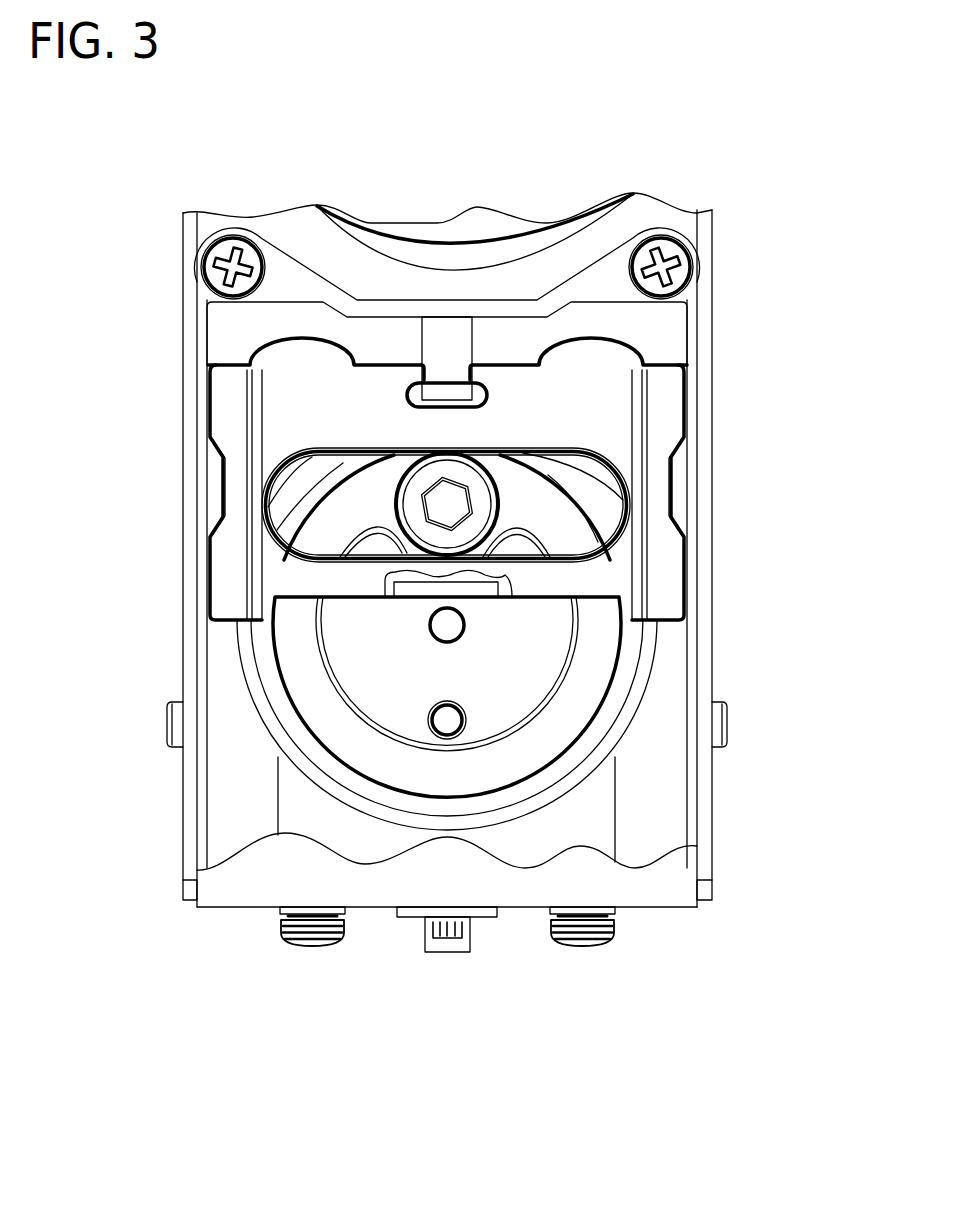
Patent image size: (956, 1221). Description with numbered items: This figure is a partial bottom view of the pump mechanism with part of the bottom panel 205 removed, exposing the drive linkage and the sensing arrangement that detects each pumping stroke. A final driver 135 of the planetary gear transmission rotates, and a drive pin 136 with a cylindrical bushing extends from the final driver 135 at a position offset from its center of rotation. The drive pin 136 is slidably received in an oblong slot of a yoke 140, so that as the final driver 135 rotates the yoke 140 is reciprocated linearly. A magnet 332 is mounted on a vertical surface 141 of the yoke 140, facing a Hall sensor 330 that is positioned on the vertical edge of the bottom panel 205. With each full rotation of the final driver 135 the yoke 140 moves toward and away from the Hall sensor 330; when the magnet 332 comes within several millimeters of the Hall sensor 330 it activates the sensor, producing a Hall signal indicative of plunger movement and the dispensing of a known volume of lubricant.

The yoke 140 is at (222, 402).
The drive pin 136 is at (472, 495).
The vertical surface 141 is at (543, 600).
The magnet 332 is at (413, 595).
The final driver 135 is at (360, 742).
The bottom panel 205 is at (247, 907).
The Hall sensor 330 is at (447, 947).